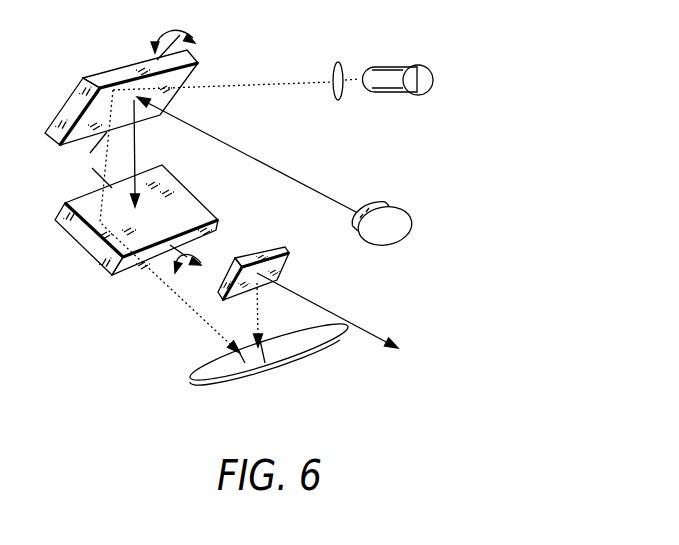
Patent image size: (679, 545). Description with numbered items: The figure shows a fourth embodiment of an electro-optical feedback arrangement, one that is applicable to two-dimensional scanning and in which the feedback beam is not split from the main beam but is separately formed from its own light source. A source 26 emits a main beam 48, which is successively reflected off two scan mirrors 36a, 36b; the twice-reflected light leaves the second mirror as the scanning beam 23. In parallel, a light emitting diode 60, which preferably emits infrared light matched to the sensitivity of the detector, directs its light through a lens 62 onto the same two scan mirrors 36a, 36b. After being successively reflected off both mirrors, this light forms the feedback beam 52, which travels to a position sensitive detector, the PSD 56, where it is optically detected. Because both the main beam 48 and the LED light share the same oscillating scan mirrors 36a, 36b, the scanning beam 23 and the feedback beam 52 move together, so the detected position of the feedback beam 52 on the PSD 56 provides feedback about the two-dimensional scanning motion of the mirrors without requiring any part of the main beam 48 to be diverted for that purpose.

The scan mirror 36a is at (78, 97).
The scan mirror 36b is at (78, 230).
The main beam 48 is at (258, 160).
The lens 62 is at (337, 65).
The light emitting diode 60 is at (393, 83).
The source 26 is at (393, 235).
The scanning beam 23 is at (317, 305).
The position sensitive detector 56 is at (235, 363).
The feedback beam 52 is at (177, 298).